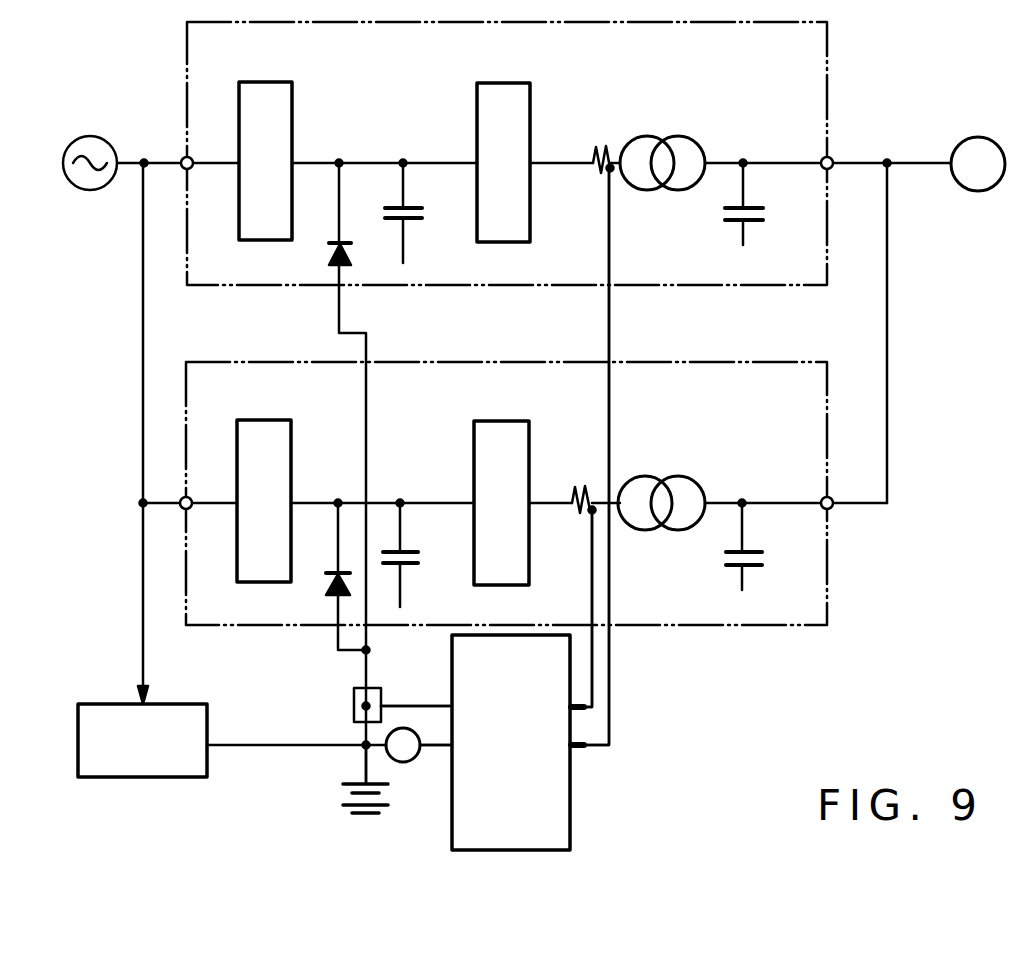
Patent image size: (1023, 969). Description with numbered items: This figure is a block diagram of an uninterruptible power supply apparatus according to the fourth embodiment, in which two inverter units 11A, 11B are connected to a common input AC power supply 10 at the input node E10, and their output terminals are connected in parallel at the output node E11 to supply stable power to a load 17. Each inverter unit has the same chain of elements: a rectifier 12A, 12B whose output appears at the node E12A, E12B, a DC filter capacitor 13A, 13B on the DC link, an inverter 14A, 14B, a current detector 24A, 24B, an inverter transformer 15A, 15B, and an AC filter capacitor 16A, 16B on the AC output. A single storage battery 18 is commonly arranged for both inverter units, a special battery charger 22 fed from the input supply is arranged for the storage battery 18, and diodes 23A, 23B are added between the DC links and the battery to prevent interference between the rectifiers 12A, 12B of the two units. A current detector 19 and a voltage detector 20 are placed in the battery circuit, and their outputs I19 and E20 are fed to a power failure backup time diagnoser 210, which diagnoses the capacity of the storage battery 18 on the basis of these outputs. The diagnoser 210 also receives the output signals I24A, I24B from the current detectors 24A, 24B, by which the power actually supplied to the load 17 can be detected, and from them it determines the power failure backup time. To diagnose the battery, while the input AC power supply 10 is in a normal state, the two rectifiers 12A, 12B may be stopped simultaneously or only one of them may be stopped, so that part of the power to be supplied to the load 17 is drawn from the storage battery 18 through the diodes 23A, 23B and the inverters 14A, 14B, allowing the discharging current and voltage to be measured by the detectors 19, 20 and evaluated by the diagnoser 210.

The input AC power supply 10 is at (88, 135).
The input AC power supply voltage point E10 is at (144, 159).
The inverter unit 11A is at (828, 29).
The inverter unit 11B is at (506, 471).
The rectifier 12A is at (266, 81).
The rectifier 12B is at (270, 420).
The rectifier output voltage point E12A is at (339, 160).
The rectifier output voltage point E12B is at (338, 502).
The DC filter capacitor 13A is at (410, 201).
The DC filter capacitor 13B is at (433, 547).
The diode 23A is at (328, 248).
The diode 23B is at (323, 583).
The inverter 14A is at (504, 83).
The inverter 14B is at (508, 421).
The current detector 24A is at (600, 145).
The current detector 24B is at (576, 482).
The inverter transformer 15A is at (670, 137).
The inverter transformer 15B is at (658, 476).
The AC filter capacitor 16A is at (737, 225).
The AC filter capacitor 16B is at (727, 563).
The output voltage point E11 is at (887, 161).
The load 17 is at (959, 140).
The battery charger 22 is at (83, 778).
The current detector 19 is at (347, 703).
The current detector output signal I19 is at (405, 706).
The storage battery 18 is at (340, 785).
The voltage detector 20 is at (407, 762).
The voltage detector output signal E20 is at (436, 743).
The power failure backup time diagnoser 210 is at (570, 805).
The output signal of current detector I24A is at (609, 723).
The output signal of current detector I24B is at (592, 656).